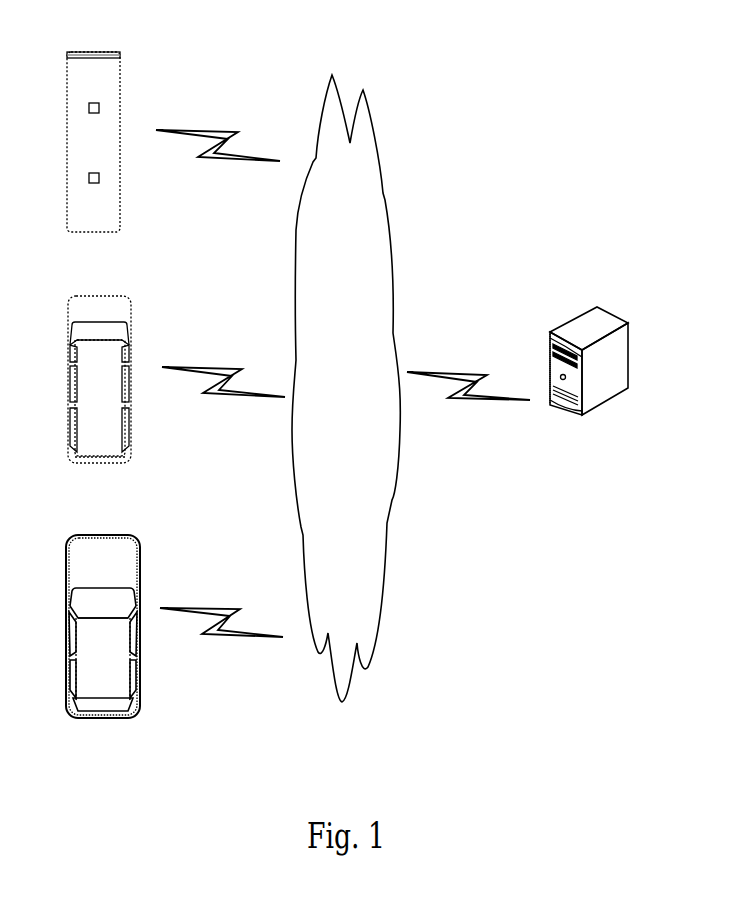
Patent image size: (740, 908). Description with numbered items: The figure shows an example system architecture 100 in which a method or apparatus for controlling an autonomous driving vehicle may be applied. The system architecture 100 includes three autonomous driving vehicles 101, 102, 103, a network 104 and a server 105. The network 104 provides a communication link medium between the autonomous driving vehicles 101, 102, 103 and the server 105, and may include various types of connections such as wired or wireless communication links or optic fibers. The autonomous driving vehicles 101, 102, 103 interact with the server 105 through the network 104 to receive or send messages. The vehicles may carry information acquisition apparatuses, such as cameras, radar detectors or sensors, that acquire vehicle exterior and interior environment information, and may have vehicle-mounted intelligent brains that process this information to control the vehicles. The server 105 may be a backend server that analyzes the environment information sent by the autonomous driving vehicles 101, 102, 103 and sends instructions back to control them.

The system architecture 100 is at (610, 83).
The autonomous driving vehicle 101 is at (93, 157).
The autonomous driving vehicle 102 is at (99, 398).
The autonomous driving vehicle 103 is at (103, 645).
The network 104 is at (346, 388).
The server 105 is at (589, 382).